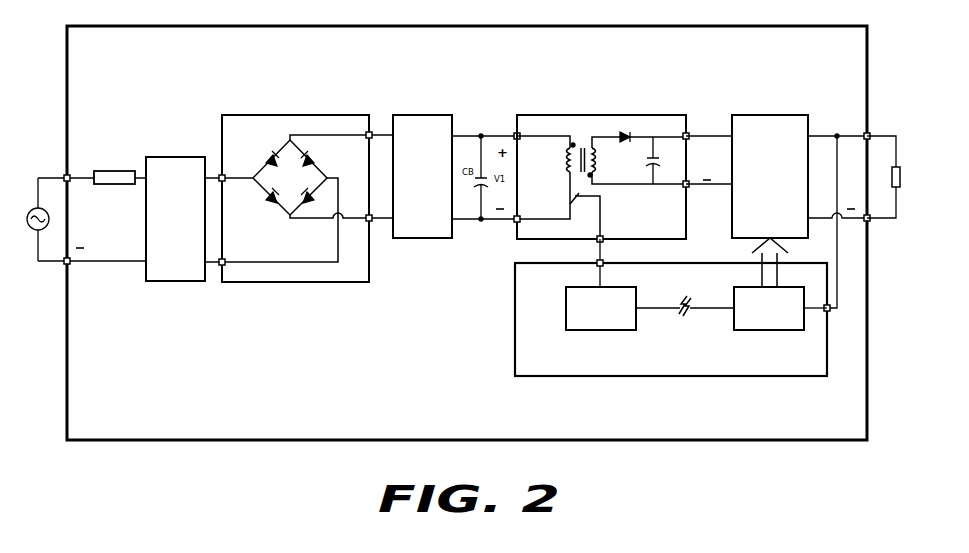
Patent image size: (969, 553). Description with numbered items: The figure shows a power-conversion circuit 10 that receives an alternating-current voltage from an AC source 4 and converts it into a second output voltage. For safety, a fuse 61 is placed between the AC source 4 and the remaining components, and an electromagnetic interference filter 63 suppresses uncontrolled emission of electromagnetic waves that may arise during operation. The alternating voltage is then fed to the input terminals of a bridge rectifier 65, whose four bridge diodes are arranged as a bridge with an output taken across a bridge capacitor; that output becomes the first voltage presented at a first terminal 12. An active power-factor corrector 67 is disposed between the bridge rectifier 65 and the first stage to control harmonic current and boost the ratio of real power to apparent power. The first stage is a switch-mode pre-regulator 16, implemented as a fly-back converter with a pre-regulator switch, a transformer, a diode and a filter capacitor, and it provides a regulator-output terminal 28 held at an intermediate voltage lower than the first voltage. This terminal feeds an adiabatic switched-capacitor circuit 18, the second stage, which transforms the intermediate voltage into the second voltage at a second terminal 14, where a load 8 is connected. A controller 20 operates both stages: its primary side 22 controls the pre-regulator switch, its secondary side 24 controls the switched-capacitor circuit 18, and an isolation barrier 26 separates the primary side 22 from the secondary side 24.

The power-conversion circuit 10 is at (90, 422).
The AC source 4 is at (27, 219).
The fuse 61 is at (116, 166).
The electromagnetic interference filter 63 is at (177, 153).
The bridge rectifier 65 is at (295, 285).
The active power-factor corrector 67 is at (424, 110).
The first terminal 12 is at (516, 134).
The switch-mode pre-regulator 16 is at (659, 226).
The regulator-output terminal 28 is at (687, 134).
The adiabatic switched-capacitor circuit 18 is at (771, 110).
The second terminal 14 is at (869, 134).
The load 8 is at (901, 178).
The controller 20 is at (524, 284).
The primary side 22 is at (601, 334).
The secondary side 24 is at (771, 334).
The isolation barrier 26 is at (684, 316).